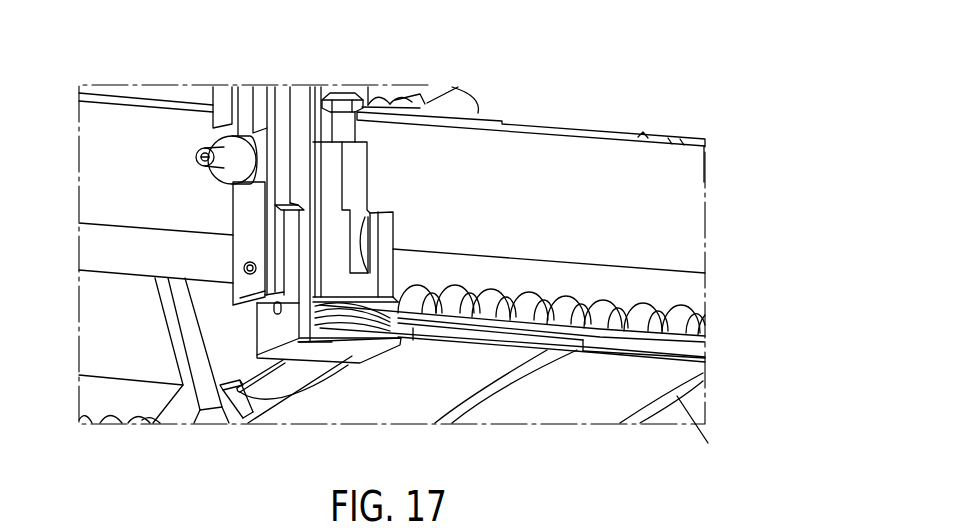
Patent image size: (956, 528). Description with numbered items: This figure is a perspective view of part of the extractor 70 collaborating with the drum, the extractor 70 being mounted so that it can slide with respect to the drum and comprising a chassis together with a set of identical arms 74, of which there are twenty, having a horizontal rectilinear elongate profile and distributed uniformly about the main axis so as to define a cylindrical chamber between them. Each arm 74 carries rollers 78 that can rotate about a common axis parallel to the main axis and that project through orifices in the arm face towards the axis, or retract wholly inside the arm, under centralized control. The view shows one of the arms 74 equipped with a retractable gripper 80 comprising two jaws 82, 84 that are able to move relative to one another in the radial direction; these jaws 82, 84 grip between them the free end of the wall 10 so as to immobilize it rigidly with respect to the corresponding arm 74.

The wall 10 is at (578, 410).
The extractor 70 is at (633, 113).
The arm 74 is at (560, 127).
The rollers 78 is at (614, 297).
The retractable gripper 80 is at (397, 217).
The jaw 82 is at (342, 352).
The jaw 84 is at (367, 292).